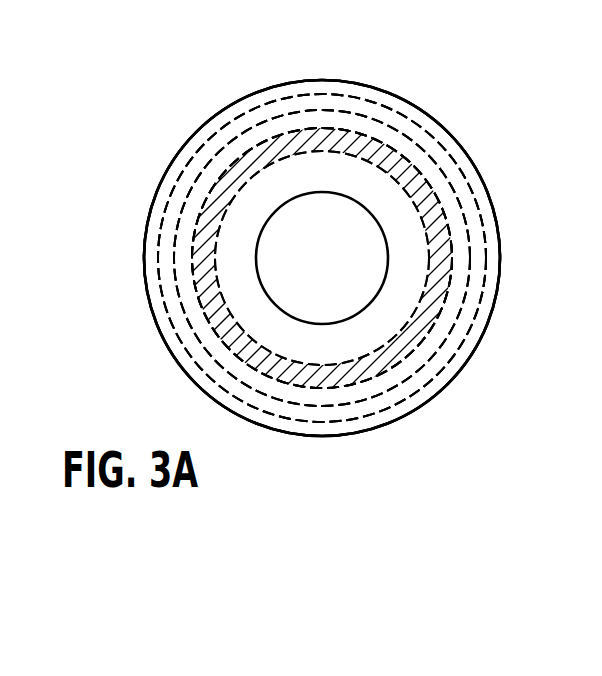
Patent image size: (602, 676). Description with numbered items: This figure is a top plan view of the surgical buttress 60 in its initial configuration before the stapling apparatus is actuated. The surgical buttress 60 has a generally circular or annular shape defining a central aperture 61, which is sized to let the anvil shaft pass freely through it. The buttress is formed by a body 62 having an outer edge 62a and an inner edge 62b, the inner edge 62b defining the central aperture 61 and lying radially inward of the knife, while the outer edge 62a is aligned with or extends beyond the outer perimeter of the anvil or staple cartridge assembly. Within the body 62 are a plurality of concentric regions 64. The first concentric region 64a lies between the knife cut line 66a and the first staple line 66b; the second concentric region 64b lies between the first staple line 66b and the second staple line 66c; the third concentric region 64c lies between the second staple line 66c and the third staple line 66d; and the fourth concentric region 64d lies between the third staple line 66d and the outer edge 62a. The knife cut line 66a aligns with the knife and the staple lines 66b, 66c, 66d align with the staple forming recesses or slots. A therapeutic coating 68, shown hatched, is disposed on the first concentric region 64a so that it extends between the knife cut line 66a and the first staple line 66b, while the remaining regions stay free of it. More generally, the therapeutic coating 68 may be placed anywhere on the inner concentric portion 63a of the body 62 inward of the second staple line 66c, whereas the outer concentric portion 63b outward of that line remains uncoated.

The surgical buttress 60 is at (231, 100).
The central aperture 61 is at (334, 268).
The body 62 is at (362, 108).
The outer edge 62a is at (327, 81).
The inner edge 62b is at (361, 201).
The inner concentric portion 63a is at (208, 193).
The outer concentric portion 63b is at (165, 242).
The concentric regions 64 is at (435, 198).
The first concentric region 64a is at (437, 237).
The second concentric region 64b is at (458, 243).
The third concentric region 64c is at (478, 262).
The fourth concentric region 64d is at (488, 297).
The knife cut line 66a is at (371, 366).
The first staple line 66b is at (397, 373).
The second staple line 66c is at (426, 372).
The third staple line 66d is at (458, 368).
The therapeutic coating 68 is at (315, 373).